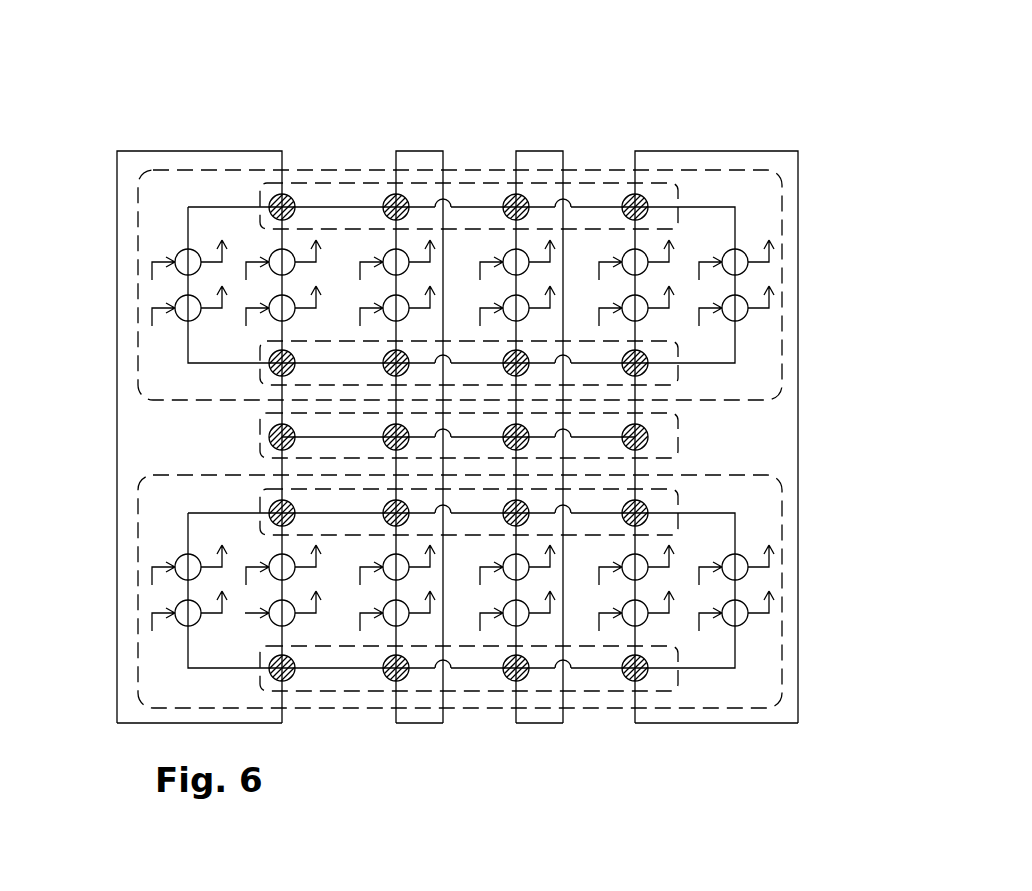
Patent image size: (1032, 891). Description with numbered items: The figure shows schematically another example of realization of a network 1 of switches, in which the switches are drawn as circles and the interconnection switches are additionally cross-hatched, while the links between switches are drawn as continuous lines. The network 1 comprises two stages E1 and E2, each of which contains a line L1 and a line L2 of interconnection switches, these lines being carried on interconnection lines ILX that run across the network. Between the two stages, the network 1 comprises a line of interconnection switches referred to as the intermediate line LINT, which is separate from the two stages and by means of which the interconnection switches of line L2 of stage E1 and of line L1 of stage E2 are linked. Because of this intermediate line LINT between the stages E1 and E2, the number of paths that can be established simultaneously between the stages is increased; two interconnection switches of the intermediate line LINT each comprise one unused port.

The network of switches 1 is at (792, 106).
The interconnection line ILX is at (405, 787).
The first stage E1 is at (138, 236).
The second stage E2 is at (137, 625).
The line L1 is at (197, 453).
The line L2 is at (678, 373).
The intermediate line LINT is at (678, 446).